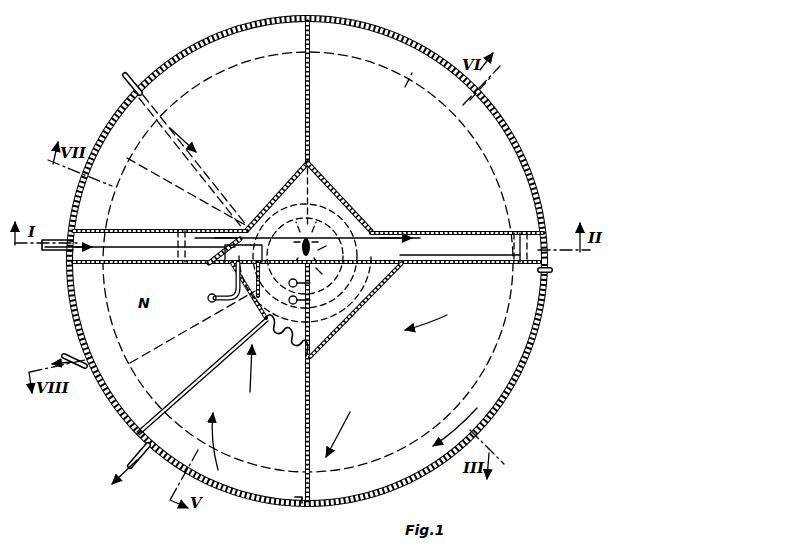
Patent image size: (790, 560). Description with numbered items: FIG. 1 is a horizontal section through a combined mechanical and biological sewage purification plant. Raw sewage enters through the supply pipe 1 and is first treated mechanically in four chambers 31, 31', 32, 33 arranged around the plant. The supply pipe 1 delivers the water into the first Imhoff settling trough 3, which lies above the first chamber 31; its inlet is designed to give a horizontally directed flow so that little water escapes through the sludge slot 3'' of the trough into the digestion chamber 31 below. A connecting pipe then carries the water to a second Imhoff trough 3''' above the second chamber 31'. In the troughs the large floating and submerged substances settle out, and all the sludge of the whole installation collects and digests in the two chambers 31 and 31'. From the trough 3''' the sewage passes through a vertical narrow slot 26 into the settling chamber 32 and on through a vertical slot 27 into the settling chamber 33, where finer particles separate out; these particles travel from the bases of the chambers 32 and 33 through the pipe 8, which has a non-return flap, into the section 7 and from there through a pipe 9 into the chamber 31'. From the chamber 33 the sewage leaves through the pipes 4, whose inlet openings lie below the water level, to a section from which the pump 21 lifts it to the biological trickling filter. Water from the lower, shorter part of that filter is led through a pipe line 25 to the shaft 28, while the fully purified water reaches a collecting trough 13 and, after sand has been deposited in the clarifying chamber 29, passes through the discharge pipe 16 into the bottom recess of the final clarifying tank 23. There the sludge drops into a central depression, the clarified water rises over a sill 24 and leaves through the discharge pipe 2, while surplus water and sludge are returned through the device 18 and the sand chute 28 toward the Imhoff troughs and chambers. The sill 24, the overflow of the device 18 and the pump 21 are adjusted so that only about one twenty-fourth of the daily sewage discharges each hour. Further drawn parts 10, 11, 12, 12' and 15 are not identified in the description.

The supply pipe 1 is at (57, 250).
The discharge pipe 2 is at (76, 369).
The first Imhoff settling trough 3 is at (292, 233).
The sludge slot 3'' is at (172, 233).
The second Imhoff trough 3''' is at (369, 236).
The pipes 4 is at (259, 368).
The section 7 is at (356, 305).
The pipe with non-return flap 8 is at (324, 275).
The pipe 9 is at (326, 252).
The central rotor zone 10 is at (305, 263).
The upper left chamber 11 is at (187, 165).
The left inclined wall 12 is at (277, 194).
The right inclined wall 12' is at (340, 197).
The collecting trough 13 is at (306, 261).
The upper right chamber 15 is at (406, 89).
The discharge pipe 16 is at (285, 283).
The device 18 is at (208, 300).
The pump 21 is at (310, 295).
The final clarifying tank 23 is at (192, 327).
The sill 24 is at (82, 314).
The pipe line 25 is at (240, 233).
The vertical narrow slot 26 is at (536, 268).
The vertical slot 27 is at (298, 500).
The shaft 28 is at (243, 270).
The clarifying chamber 29 is at (190, 401).
The sludge-storage and digestion chamber 31 is at (193, 162).
The second chamber 31' is at (435, 116).
The settling chamber 32 is at (401, 386).
The settling chamber 33 is at (288, 360).